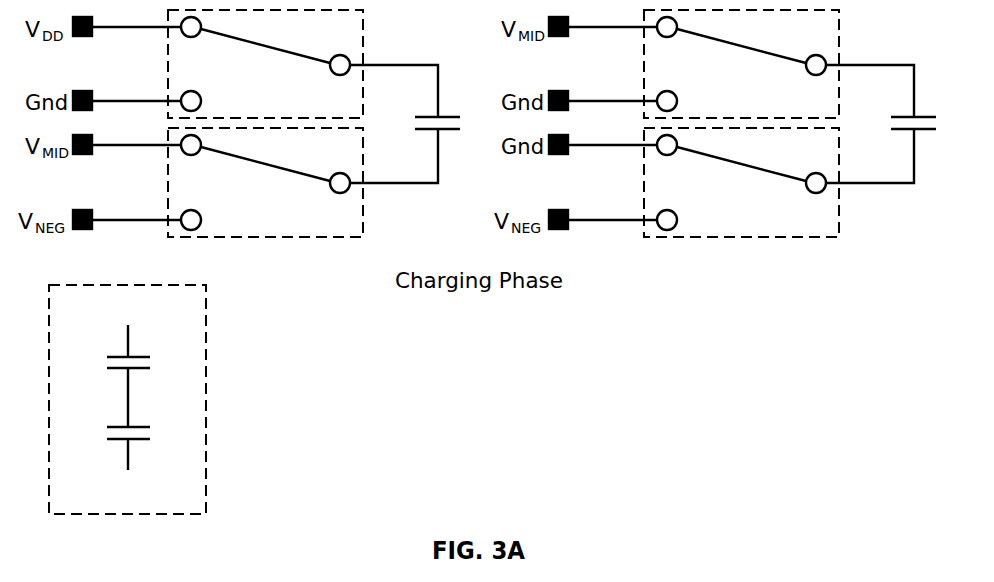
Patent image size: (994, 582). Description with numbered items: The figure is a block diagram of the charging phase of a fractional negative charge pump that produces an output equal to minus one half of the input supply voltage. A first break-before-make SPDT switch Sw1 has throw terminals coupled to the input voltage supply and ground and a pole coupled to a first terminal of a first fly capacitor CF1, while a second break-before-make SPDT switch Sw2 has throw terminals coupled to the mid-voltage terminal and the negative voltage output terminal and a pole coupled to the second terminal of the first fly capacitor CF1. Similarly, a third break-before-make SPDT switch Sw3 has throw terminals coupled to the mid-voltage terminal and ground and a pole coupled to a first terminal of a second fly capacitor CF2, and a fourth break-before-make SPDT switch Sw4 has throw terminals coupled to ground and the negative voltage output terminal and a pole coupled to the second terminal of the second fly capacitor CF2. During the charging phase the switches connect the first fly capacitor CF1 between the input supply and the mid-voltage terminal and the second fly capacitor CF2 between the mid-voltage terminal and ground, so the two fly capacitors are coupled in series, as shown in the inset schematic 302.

The inset schematic 302 is at (217, 377).
The first break-before-make SPDT switch Sw1 is at (265, 64).
The second break-before-make SPDT switch Sw2 is at (265, 182).
The third break-before-make SPDT switch Sw3 is at (741, 64).
The fourth break-before-make SPDT switch Sw4 is at (741, 182).
The first fly capacitor CF1 is at (405, 124).
The second fly capacitor CF2 is at (881, 124).